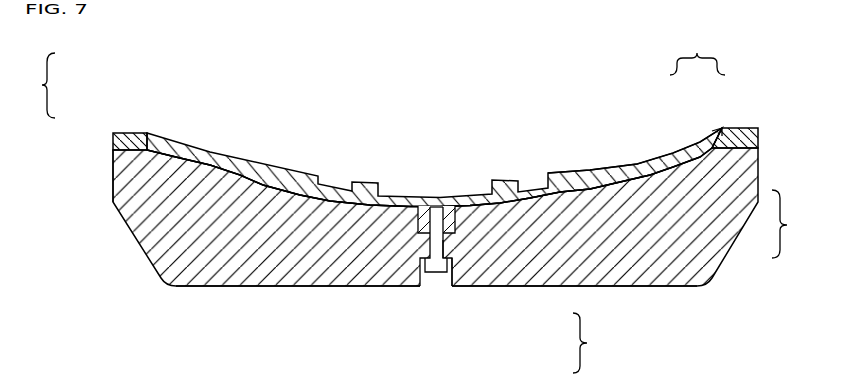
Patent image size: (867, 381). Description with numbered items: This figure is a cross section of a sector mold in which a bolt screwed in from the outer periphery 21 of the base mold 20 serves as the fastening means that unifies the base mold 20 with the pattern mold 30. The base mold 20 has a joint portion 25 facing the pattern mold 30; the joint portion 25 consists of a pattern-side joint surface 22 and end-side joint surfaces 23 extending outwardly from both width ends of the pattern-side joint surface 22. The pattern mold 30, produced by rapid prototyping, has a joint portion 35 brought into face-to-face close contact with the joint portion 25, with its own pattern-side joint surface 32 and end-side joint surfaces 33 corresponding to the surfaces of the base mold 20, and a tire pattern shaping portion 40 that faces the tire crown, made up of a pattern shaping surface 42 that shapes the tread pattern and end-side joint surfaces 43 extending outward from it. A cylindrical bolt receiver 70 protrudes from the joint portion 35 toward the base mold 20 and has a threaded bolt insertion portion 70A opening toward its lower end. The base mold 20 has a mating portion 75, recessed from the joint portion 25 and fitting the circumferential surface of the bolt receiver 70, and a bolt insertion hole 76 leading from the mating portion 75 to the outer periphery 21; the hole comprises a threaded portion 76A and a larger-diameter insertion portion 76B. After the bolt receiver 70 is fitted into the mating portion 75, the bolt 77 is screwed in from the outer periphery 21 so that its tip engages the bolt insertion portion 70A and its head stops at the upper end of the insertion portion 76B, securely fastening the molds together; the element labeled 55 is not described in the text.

The base mold 20 is at (122, 240).
The outer periphery 21 is at (352, 286).
The pattern-side joint surface 22 is at (210, 165).
The end-side joint surfaces 23 is at (113, 128).
The joint portion 25 is at (37, 85).
The pattern mold 30 is at (275, 147).
The pattern-side joint surface 32 is at (638, 178).
The end-side joint surfaces 33 is at (747, 148).
The joint portion 35 is at (792, 224).
The tire pattern shaping portion 40 is at (697, 55).
The pattern shaping surface 42 is at (663, 158).
The end-side joint surfaces 43 is at (722, 128).
The side wall 55 is at (125, 187).
The bolt receiver 70 is at (449, 239).
The bolt insertion portion 70A is at (432, 207).
The mating portion 75 is at (418, 210).
The bolt insertion hole 76 is at (592, 343).
The threaded portion 76A is at (446, 250).
The insertion portion 76B is at (452, 275).
The bolt 77 is at (435, 272).